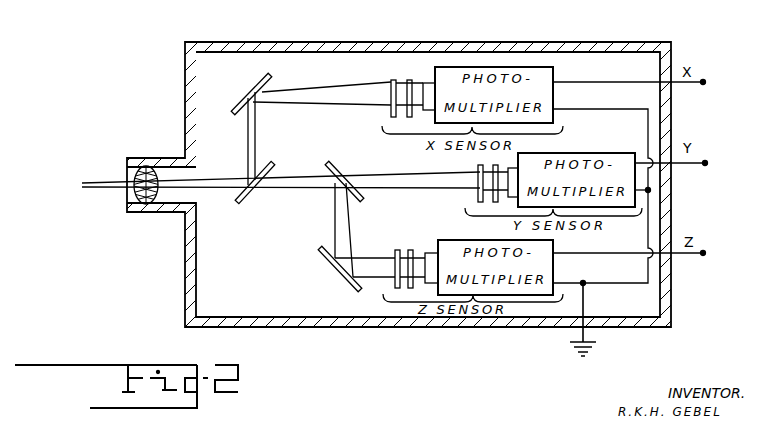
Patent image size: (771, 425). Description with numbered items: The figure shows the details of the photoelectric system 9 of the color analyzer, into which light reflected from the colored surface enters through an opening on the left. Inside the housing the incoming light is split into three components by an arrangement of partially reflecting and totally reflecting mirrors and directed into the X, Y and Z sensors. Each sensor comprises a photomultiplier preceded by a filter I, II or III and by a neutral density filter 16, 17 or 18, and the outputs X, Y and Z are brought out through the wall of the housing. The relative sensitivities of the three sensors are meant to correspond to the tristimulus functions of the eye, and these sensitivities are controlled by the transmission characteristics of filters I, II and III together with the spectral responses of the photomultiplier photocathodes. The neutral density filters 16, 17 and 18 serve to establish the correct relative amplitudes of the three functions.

The photoelectric system 9 is at (365, 43).
The filter I is at (391, 86).
The filter II is at (478, 170).
The filter III is at (395, 256).
The neutral density filter 16 is at (418, 69).
The neutral density filter 17 is at (496, 168).
The neutral density filter 18 is at (412, 250).